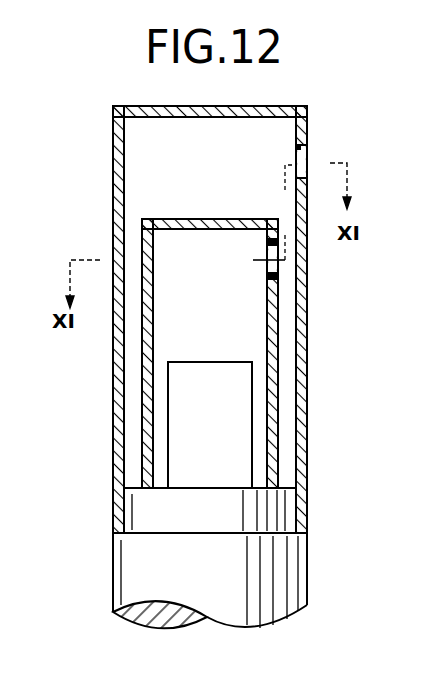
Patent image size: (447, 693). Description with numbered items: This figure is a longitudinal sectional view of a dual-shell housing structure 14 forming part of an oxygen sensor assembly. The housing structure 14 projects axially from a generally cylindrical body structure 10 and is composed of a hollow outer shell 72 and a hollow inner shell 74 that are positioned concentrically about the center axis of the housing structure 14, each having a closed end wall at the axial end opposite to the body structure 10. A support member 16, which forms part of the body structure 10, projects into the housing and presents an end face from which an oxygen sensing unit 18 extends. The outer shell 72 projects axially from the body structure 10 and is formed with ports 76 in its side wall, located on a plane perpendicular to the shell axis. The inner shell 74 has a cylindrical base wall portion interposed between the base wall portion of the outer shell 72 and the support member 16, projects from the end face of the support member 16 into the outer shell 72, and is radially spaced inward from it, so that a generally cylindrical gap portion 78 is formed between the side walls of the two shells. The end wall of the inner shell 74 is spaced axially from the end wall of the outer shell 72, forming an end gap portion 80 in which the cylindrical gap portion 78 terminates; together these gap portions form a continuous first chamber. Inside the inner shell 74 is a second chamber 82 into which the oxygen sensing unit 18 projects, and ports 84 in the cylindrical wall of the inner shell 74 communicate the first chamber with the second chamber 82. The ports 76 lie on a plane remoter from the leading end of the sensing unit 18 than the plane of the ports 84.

The body structure 10 is at (307, 578).
The housing structure 14 is at (101, 183).
The support member 16 is at (288, 486).
The oxygen sensing unit 18 is at (188, 362).
The outer shell 72 is at (307, 390).
The inner shell 74 is at (142, 427).
The ports 76 is at (305, 155).
The cylindrical gap portion 78 is at (283, 357).
The end gap portion 80 is at (224, 176).
The second chamber 82 is at (250, 302).
The ports 84 is at (278, 273).